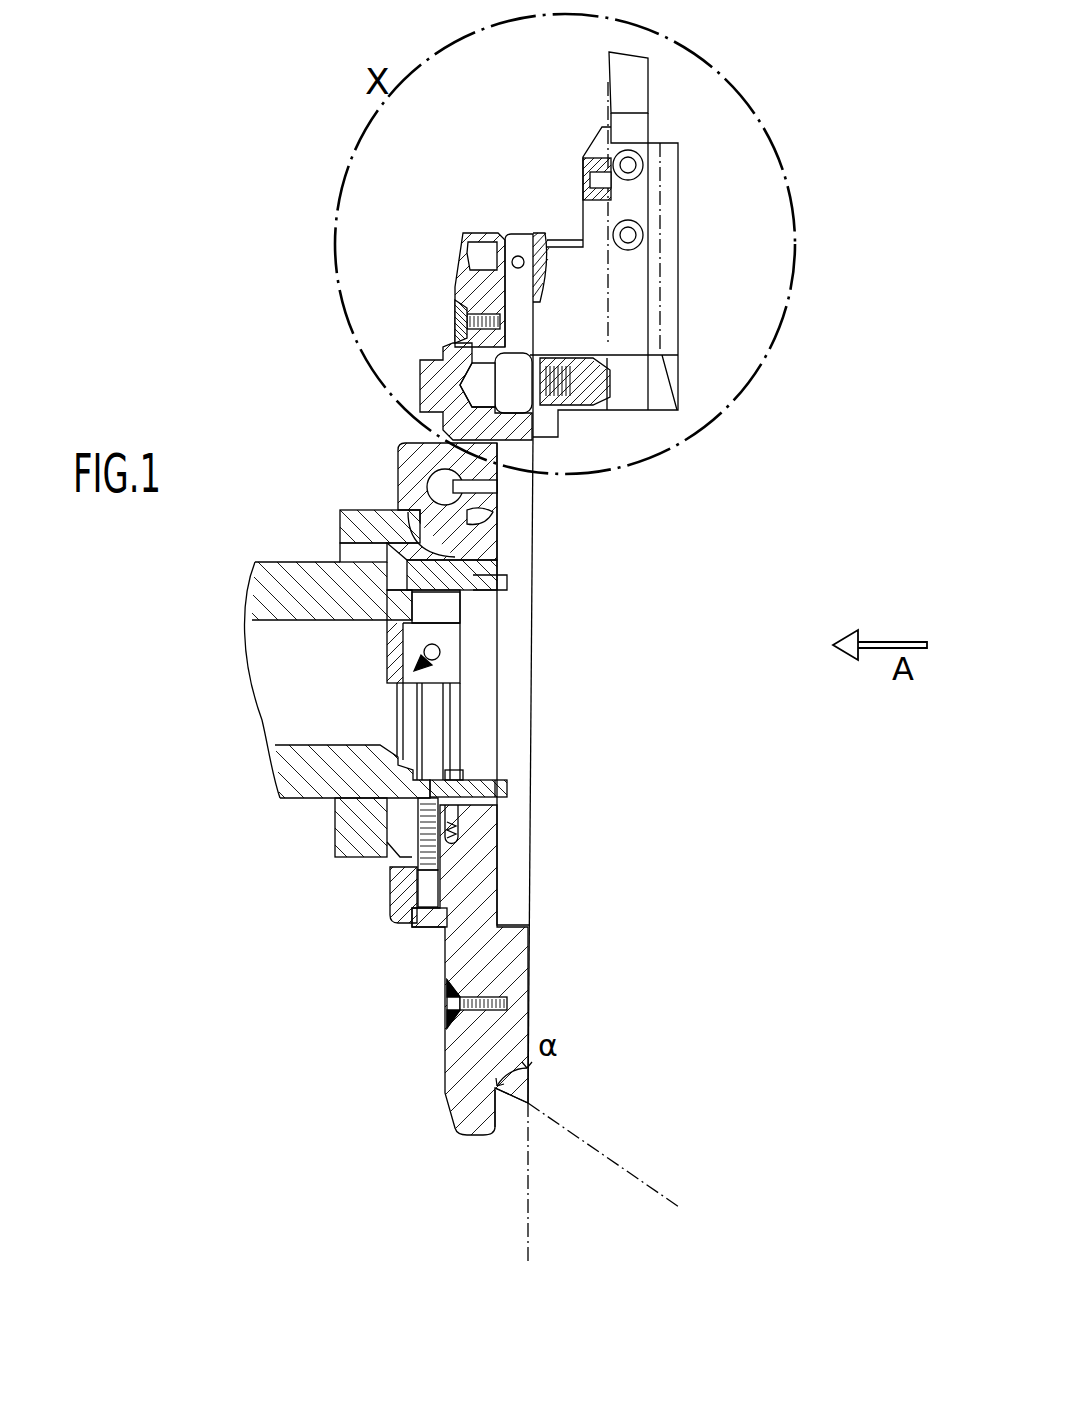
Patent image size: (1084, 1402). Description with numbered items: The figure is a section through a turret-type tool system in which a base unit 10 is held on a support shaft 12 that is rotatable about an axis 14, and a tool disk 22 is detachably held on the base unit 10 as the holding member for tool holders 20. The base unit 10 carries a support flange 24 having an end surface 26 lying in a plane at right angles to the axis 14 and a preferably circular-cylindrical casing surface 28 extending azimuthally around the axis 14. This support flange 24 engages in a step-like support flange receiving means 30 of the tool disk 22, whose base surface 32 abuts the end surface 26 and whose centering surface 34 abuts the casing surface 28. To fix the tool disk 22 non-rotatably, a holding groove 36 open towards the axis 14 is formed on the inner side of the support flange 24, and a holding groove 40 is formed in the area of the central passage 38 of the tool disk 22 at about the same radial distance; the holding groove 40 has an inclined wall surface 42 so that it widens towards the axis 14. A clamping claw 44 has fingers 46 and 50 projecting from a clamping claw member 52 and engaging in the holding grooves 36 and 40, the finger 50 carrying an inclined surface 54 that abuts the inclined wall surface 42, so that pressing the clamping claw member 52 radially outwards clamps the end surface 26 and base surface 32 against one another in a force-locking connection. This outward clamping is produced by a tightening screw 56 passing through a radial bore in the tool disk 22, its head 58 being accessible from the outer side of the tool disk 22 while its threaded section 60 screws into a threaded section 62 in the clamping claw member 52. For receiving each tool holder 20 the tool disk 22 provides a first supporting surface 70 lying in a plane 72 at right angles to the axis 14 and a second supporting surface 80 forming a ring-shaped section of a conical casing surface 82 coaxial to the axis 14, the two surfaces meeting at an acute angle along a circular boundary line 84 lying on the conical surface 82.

The base unit 10 is at (297, 778).
The support shaft 12 is at (286, 590).
The axis 14 is at (512, 682).
The tool holder 20 is at (618, 309).
The tool disk 22 is at (471, 944).
The support flange 24 is at (388, 870).
The end surface 26 is at (500, 497).
The casing surface 28 is at (433, 431).
The support flange receiving means 30 is at (406, 530).
The base surface 32 is at (470, 565).
The centering surface 34 is at (400, 506).
The holding groove 36 is at (407, 704).
The central passage 38 is at (450, 803).
The holding groove 40 is at (458, 738).
The inclined wall surface 42 is at (403, 739).
The clamping claw 44 is at (460, 675).
The finger 46 is at (393, 858).
The finger 50 is at (450, 826).
The clamping claw member 52 is at (447, 640).
The inclined surface 54 is at (440, 850).
The tightening screw 56 is at (427, 888).
The head 58 is at (431, 922).
The threaded section 60 is at (450, 817).
The threaded section 62 is at (457, 775).
The first supporting surface 70 is at (536, 326).
The plane 72 is at (528, 1203).
The second supporting surface 80 is at (518, 1100).
The casing surface 82 is at (662, 1196).
The circular boundary line 84 is at (530, 1102).